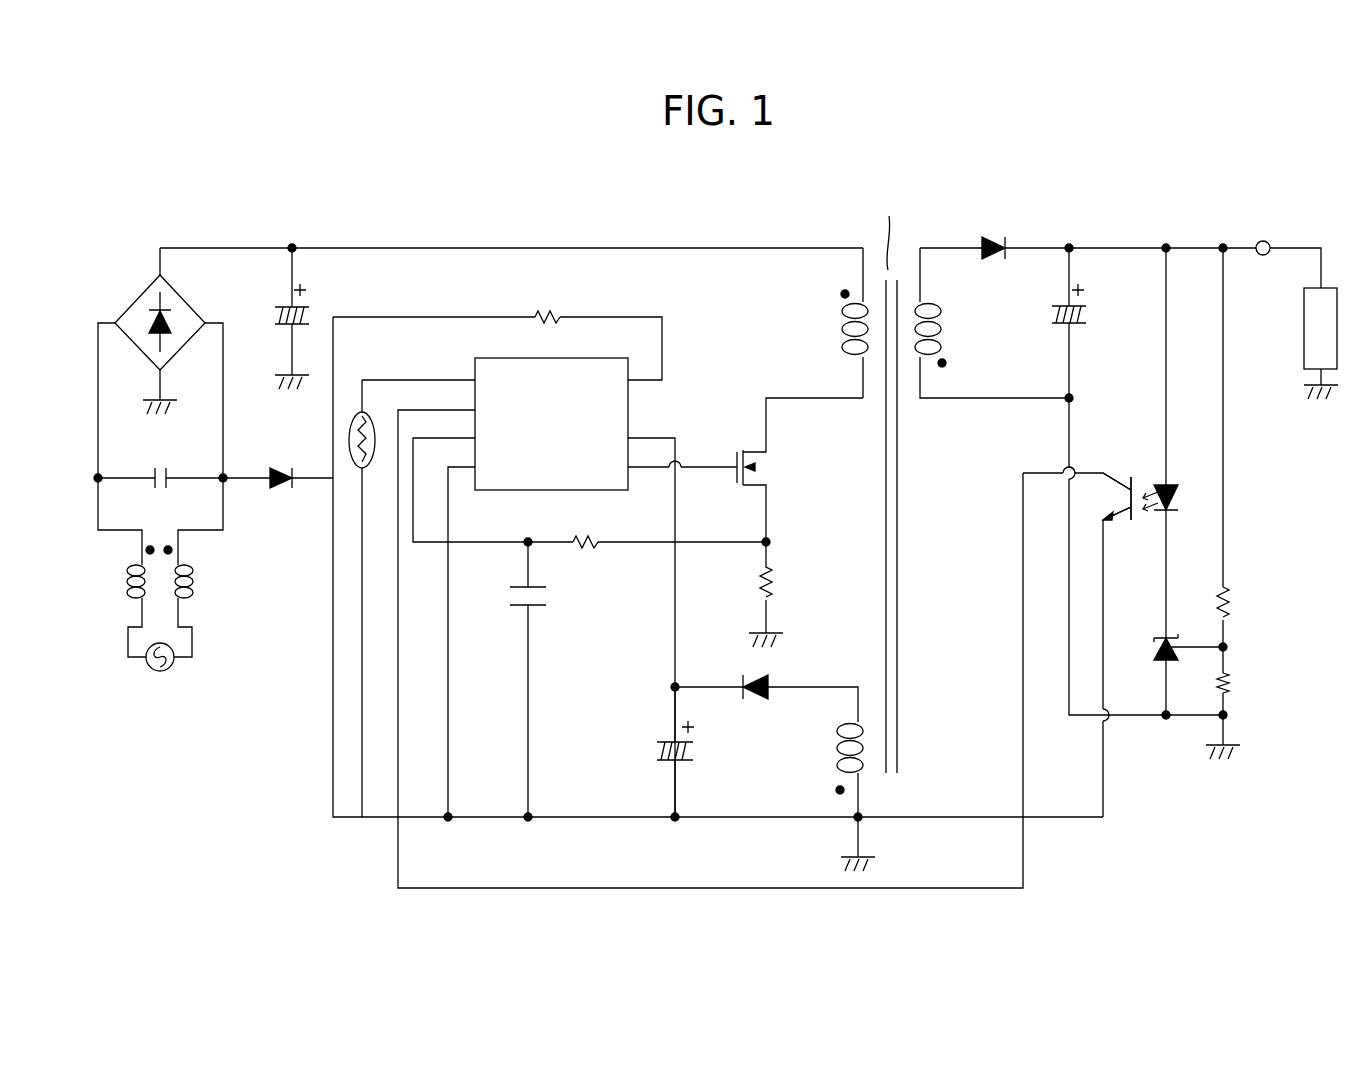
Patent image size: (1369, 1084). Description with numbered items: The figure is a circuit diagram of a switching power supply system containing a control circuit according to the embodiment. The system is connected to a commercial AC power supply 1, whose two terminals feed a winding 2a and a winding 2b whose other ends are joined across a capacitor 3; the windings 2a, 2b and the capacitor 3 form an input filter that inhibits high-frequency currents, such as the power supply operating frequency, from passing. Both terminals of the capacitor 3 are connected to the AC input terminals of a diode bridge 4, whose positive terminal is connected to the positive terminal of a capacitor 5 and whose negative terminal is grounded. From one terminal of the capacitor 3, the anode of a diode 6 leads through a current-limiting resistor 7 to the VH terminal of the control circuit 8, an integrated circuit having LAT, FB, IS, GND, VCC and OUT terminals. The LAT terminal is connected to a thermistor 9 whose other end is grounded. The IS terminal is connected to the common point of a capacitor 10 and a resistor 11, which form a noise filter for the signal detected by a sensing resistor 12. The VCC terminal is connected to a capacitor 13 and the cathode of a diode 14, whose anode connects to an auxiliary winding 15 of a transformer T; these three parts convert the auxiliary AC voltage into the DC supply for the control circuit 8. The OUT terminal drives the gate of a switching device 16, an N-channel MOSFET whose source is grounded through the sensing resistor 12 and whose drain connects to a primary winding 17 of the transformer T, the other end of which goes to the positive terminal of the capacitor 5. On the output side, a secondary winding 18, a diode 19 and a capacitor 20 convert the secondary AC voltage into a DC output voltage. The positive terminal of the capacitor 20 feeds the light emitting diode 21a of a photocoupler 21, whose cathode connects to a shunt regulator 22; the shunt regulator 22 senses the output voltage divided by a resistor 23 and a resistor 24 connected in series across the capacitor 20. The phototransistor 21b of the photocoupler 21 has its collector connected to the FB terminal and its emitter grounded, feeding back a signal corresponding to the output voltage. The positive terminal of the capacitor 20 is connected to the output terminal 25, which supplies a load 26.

The commercial AC power supply 1 is at (160, 671).
The winding 2a is at (127, 578).
The winding 2b is at (193, 578).
The capacitor 3 is at (165, 470).
The diode bridge 4 is at (150, 292).
The capacitor 5 is at (282, 312).
The diode 6 is at (283, 466).
The current-limiting resistor 7 is at (550, 311).
The control circuit 8 is at (474, 365).
The thermistor 9 is at (360, 412).
The capacitor 10 is at (508, 596).
The resistor 11 is at (585, 538).
The sensing resistor 12 is at (778, 585).
The capacitor 13 is at (655, 750).
The diode 14 is at (770, 682).
The auxiliary winding 15 is at (836, 750).
The switching device 16 is at (762, 460).
The primary winding 17 is at (840, 330).
The secondary winding 18 is at (942, 330).
The diode 19 is at (994, 237).
The capacitor 20 is at (1082, 318).
The photocoupler 21 is at (1140, 478).
The light emitting diode 21a is at (1182, 498).
The phototransistor 21b is at (1108, 494).
The shunt regulator 22 is at (1160, 636).
The resistor 23 is at (1232, 605).
The resistor 24 is at (1232, 685).
The output terminal 25 is at (1263, 240).
The load 26 is at (1304, 325).
The transformer T is at (887, 229).